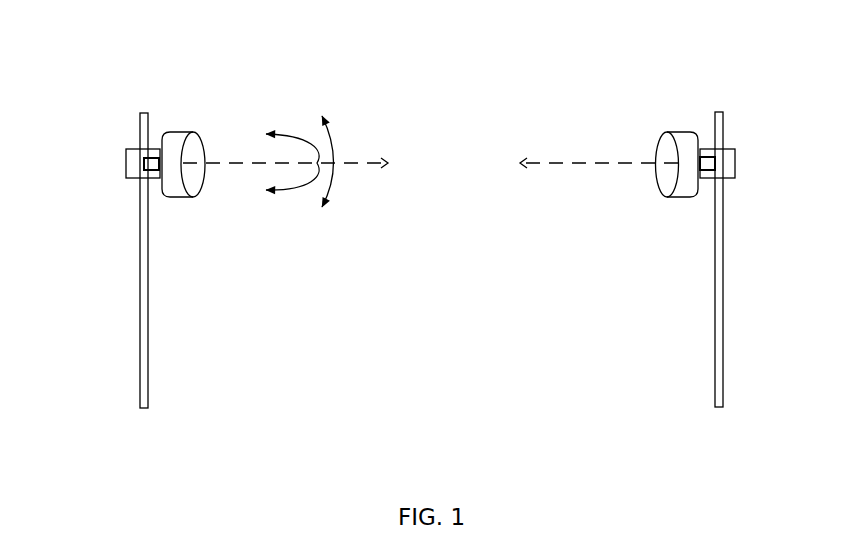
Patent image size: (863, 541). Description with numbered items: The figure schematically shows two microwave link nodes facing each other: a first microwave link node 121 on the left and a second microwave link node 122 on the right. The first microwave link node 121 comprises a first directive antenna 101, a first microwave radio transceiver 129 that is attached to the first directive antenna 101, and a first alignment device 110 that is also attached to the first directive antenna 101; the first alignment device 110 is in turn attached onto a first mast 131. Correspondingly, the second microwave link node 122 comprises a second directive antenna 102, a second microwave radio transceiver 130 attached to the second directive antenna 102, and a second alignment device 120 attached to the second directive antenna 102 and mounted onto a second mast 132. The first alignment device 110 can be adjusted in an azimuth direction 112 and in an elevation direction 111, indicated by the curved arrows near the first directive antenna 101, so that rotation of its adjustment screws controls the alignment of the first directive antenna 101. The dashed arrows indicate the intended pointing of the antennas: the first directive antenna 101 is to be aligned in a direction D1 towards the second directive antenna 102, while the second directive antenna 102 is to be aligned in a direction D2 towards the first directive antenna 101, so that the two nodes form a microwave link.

The first microwave link node 121 is at (90, 68).
The second microwave link node 122 is at (767, 73).
The first directive antenna 101 is at (178, 137).
The second directive antenna 102 is at (683, 148).
The first alignment device 110 is at (125, 163).
The second alignment device 120 is at (735, 170).
The first microwave radio transceiver 129 is at (152, 170).
The second microwave radio transceiver 130 is at (710, 170).
The first mast 131 is at (143, 295).
The second mast 132 is at (717, 285).
The elevation direction 111 is at (337, 187).
The azimuth direction 112 is at (290, 188).
The direction D1 is at (295, 149).
The direction D2 is at (597, 149).